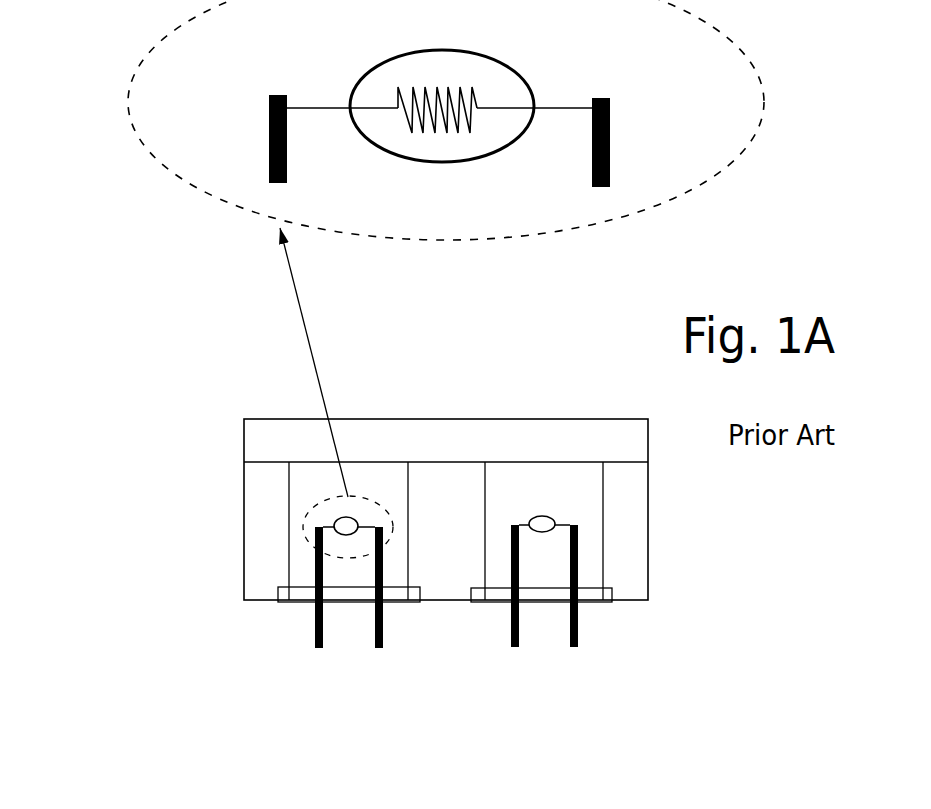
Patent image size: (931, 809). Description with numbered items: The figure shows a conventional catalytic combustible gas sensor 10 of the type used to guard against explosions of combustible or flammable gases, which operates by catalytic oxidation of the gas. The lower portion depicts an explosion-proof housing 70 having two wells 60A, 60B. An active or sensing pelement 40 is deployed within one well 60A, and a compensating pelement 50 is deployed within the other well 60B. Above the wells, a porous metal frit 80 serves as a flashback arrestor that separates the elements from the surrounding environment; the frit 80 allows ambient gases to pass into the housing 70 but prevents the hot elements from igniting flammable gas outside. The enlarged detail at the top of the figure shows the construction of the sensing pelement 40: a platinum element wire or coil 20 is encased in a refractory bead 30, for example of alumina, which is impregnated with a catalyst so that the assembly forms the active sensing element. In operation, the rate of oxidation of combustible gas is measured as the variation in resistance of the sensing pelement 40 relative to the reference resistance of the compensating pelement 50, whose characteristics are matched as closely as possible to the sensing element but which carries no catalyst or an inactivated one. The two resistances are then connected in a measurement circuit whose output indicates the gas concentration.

The combustible gas sensor 10 is at (218, 515).
The platinum element wire or coil 20 is at (392, 95).
The refractory bead 30 is at (498, 88).
The active or sensing pelement 40 is at (333, 515).
The compensating pelement 50 is at (543, 515).
The well 60A is at (395, 565).
The well 60B is at (594, 563).
The explosion-proof housing 70 is at (648, 508).
The porous metal frit 80 is at (272, 428).